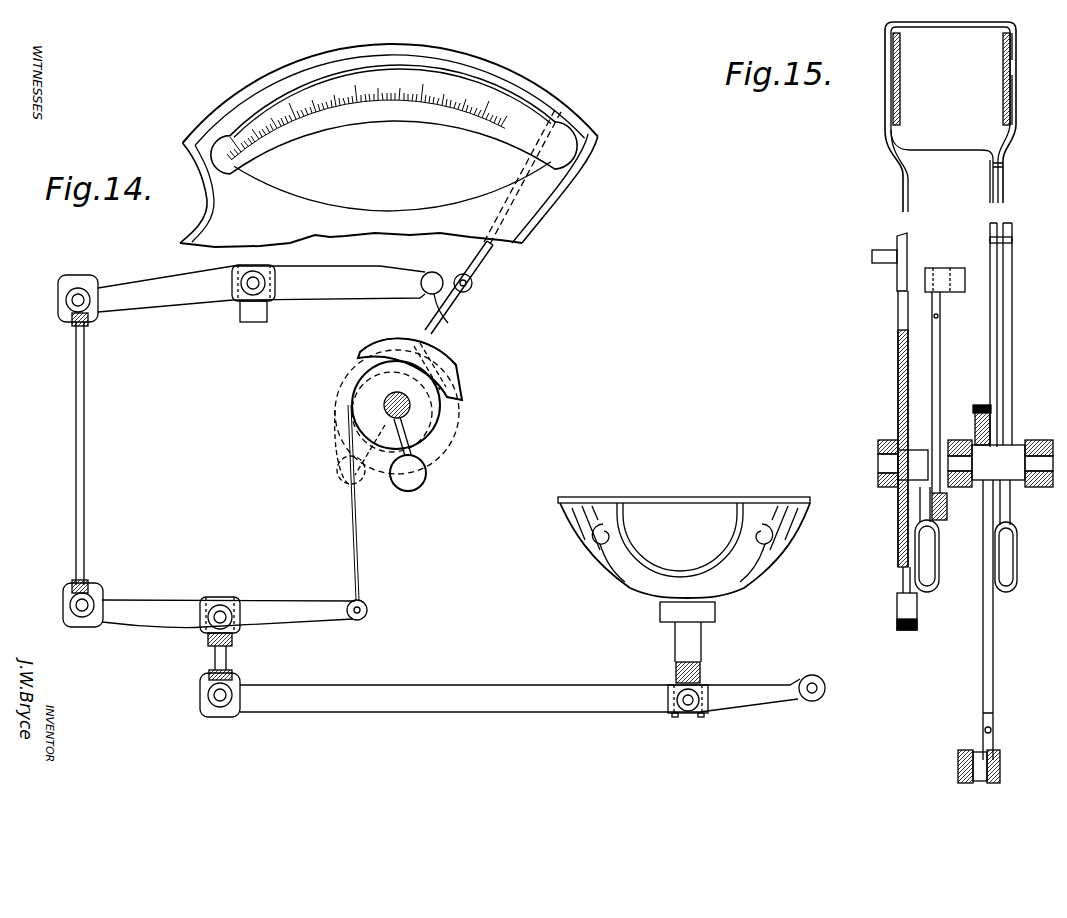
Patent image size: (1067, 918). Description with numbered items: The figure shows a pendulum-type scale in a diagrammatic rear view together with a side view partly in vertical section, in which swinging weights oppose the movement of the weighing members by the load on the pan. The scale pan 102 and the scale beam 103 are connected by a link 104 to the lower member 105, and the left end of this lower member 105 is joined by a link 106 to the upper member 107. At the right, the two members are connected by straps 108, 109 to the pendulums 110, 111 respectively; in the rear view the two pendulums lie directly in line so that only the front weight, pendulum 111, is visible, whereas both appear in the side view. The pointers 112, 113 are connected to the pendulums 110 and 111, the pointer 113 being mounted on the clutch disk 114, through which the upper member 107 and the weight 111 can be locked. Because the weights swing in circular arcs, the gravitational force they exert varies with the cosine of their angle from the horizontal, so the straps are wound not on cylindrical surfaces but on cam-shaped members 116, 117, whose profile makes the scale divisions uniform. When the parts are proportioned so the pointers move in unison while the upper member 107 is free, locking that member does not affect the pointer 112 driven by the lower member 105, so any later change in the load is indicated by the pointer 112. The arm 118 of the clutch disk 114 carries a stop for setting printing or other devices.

In FIG. 14, the scale pan 102 is at (684, 547).
In FIG. 14, the scale beam 103 is at (458, 697).
In FIG. 14, the link 104 is at (213, 660).
In FIG. 14, the lower member 105 is at (155, 605).
In FIG. 15, the lower member 105 is at (962, 752).
In FIG. 14, the link 106 is at (88, 490).
In FIG. 14, the upper member 107 is at (188, 302).
In FIG. 14, the strap 108 is at (352, 556).
In FIG. 15, the strap 108 is at (983, 663).
In FIG. 14, the strap 109 is at (432, 427).
In FIG. 15, the strap 109 is at (938, 357).
In FIG. 15, the pendulum 110 is at (1011, 592).
In FIG. 14, the pendulum 111 is at (427, 478).
In FIG. 15, the pendulum 111 is at (935, 590).
In FIG. 14, the pointer 112 is at (450, 364).
In FIG. 15, the pointer 112 is at (998, 312).
In FIG. 14, the pointer 113 is at (484, 256).
In FIG. 15, the pointer 113 is at (900, 213).
In FIG. 14, the clutch disk 114 is at (400, 112).
In FIG. 15, the clutch disk 114 is at (898, 392).
In FIG. 14, the cam-shaped member 116 is at (362, 402).
In FIG. 14, the cam-shaped member 117 is at (457, 321).
In FIG. 14, the arm 118 is at (473, 285).